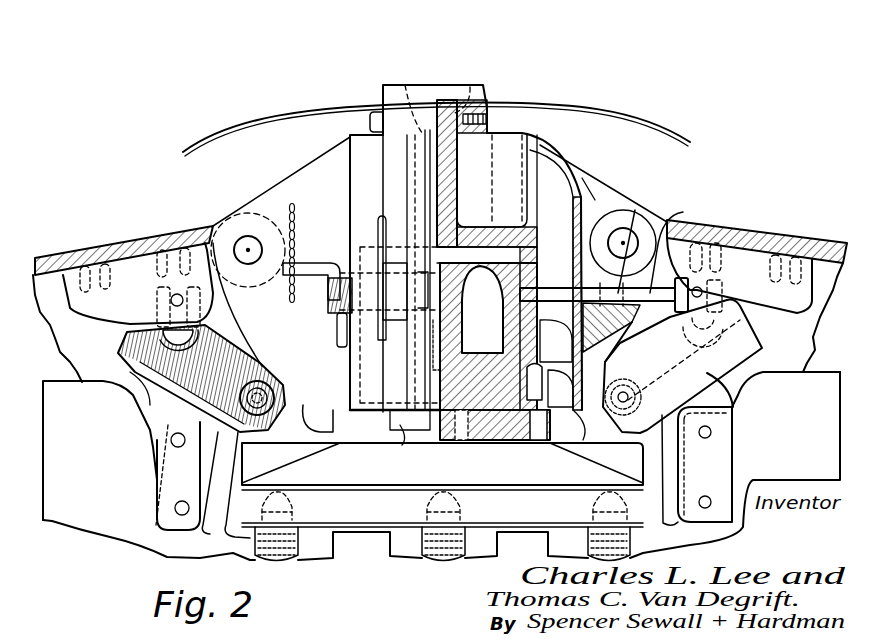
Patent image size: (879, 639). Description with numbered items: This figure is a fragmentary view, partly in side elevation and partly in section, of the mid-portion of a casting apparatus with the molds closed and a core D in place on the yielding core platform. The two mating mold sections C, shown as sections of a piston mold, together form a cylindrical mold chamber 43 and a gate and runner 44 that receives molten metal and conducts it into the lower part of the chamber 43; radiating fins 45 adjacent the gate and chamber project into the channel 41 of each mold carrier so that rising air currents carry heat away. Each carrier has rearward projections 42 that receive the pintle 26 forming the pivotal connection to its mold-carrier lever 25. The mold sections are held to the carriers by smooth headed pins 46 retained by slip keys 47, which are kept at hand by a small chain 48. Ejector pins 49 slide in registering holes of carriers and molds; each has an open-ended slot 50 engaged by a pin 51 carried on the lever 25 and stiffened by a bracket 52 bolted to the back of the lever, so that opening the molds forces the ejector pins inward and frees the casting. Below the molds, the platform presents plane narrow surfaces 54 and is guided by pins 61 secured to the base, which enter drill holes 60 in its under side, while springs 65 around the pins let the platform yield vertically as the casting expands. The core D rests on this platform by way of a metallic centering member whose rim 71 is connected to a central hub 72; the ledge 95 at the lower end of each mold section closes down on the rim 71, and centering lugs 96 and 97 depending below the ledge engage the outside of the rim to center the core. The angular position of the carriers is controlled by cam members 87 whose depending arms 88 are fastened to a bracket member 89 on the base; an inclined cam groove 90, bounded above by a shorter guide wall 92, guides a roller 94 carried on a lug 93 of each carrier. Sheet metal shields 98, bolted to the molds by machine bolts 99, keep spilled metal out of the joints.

The mold-carrier lever 25 is at (57, 262).
The pintle 26 is at (626, 243).
The channel 41 is at (596, 196).
The rearward projections 42 is at (266, 197).
The mold chamber 43 is at (482, 253).
The gate and runner 44 is at (421, 97).
The radiating fins 45 is at (532, 178).
The pins 46 is at (332, 308).
The slip keys or locking pins 47 is at (326, 262).
The chain 48 is at (293, 210).
The ejector pins 49 is at (168, 282).
The slot or way 50 is at (160, 305).
The pin 51 is at (713, 290).
The stiffening bracket 52 is at (128, 262).
The plane narrow surfaces 54 is at (268, 437).
The drill holes 60 is at (597, 500).
The pins 61 is at (460, 518).
The springs 65 is at (442, 544).
The rim 71 is at (535, 433).
The hub 72 is at (458, 433).
The cam members 87 is at (173, 383).
The depending arms 88 is at (200, 461).
The bracket member 89 is at (87, 388).
The cam groove 90 is at (207, 377).
The upper guide wall 92 is at (230, 347).
The lug 93 is at (622, 380).
The roller 94 is at (200, 470).
The ledge 95 is at (548, 420).
The centering lug 96 is at (312, 425).
The centering lugs 97 is at (410, 433).
The sheet metal shields 98 is at (298, 103).
The machine bolts 99 is at (370, 115).
The mold sections C is at (505, 223).
The core D is at (540, 232).